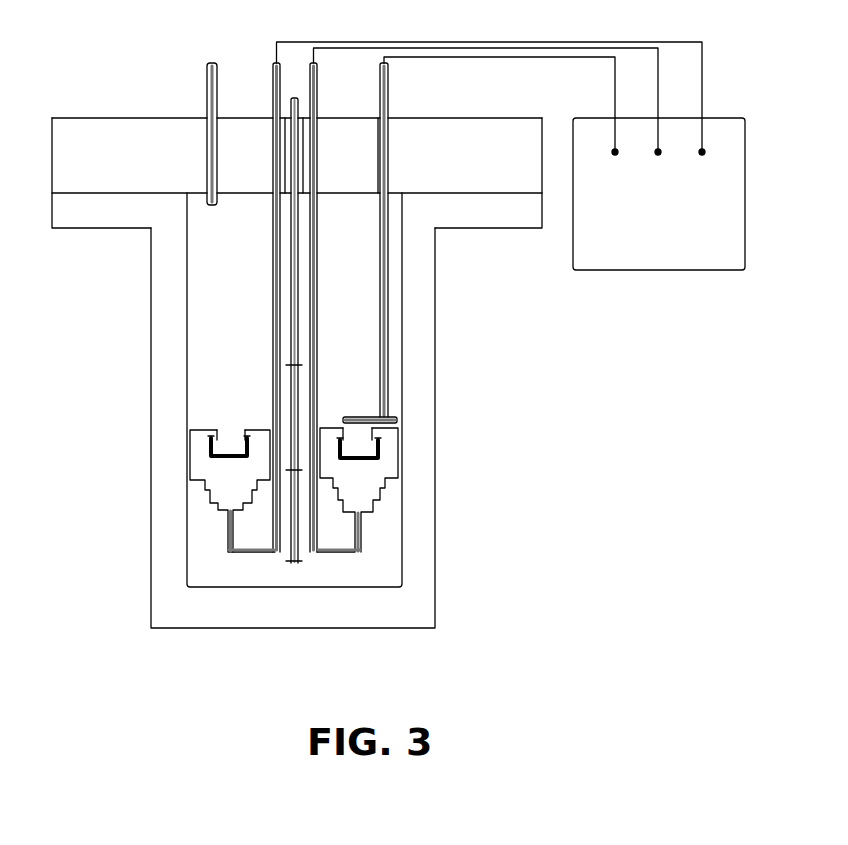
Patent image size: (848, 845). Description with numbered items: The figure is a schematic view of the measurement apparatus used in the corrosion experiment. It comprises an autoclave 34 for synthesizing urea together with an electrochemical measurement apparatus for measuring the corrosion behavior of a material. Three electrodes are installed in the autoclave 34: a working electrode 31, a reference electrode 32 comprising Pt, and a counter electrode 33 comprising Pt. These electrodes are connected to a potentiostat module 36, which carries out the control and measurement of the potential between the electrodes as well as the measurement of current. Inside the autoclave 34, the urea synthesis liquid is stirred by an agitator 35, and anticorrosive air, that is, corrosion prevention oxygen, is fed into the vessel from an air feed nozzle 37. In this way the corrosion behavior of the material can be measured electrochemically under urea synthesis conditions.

The working electrode 31 is at (223, 447).
The reference electrode 32 is at (196, 474).
The counter electrode 33 is at (397, 422).
The autoclave 34 is at (413, 548).
The agitator 35 is at (297, 328).
The potentiostat module 36 is at (650, 250).
The air feed nozzle 37 is at (213, 62).